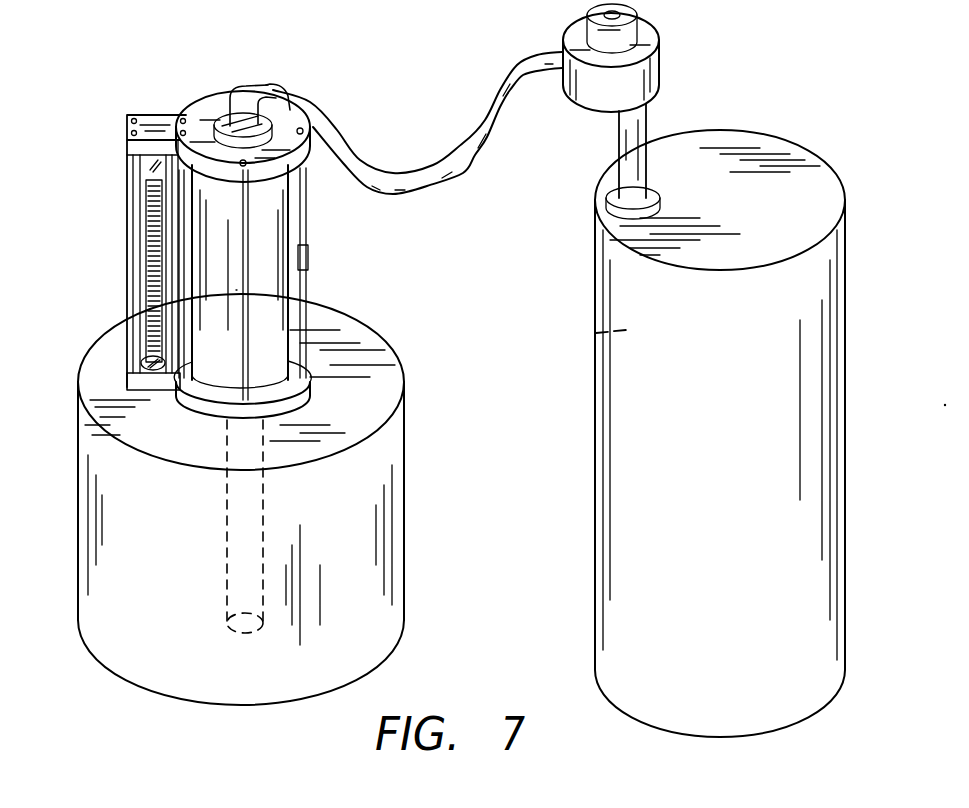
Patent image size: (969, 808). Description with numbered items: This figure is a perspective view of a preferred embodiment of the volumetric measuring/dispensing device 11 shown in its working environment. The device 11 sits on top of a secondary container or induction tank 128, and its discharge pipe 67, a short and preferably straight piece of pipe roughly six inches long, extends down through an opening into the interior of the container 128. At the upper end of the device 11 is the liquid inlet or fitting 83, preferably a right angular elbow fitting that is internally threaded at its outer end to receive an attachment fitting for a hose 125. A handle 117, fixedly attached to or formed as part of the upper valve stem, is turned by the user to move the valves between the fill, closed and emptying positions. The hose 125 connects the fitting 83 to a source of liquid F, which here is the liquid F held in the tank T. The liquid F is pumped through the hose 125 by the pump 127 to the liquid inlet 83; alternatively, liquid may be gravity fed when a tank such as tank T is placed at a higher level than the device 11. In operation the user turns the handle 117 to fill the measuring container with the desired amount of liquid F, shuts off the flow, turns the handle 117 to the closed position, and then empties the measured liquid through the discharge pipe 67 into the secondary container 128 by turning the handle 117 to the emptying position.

The volumetric measuring/dispensing device 11 is at (112, 80).
The discharge pipe 67 is at (243, 560).
The fitting 83 is at (243, 104).
The handle 117 is at (268, 92).
The hose 125 is at (348, 158).
The pump 127 is at (650, 75).
The secondary container 128 is at (385, 502).
The tank T is at (602, 280).
The liquid F is at (585, 338).